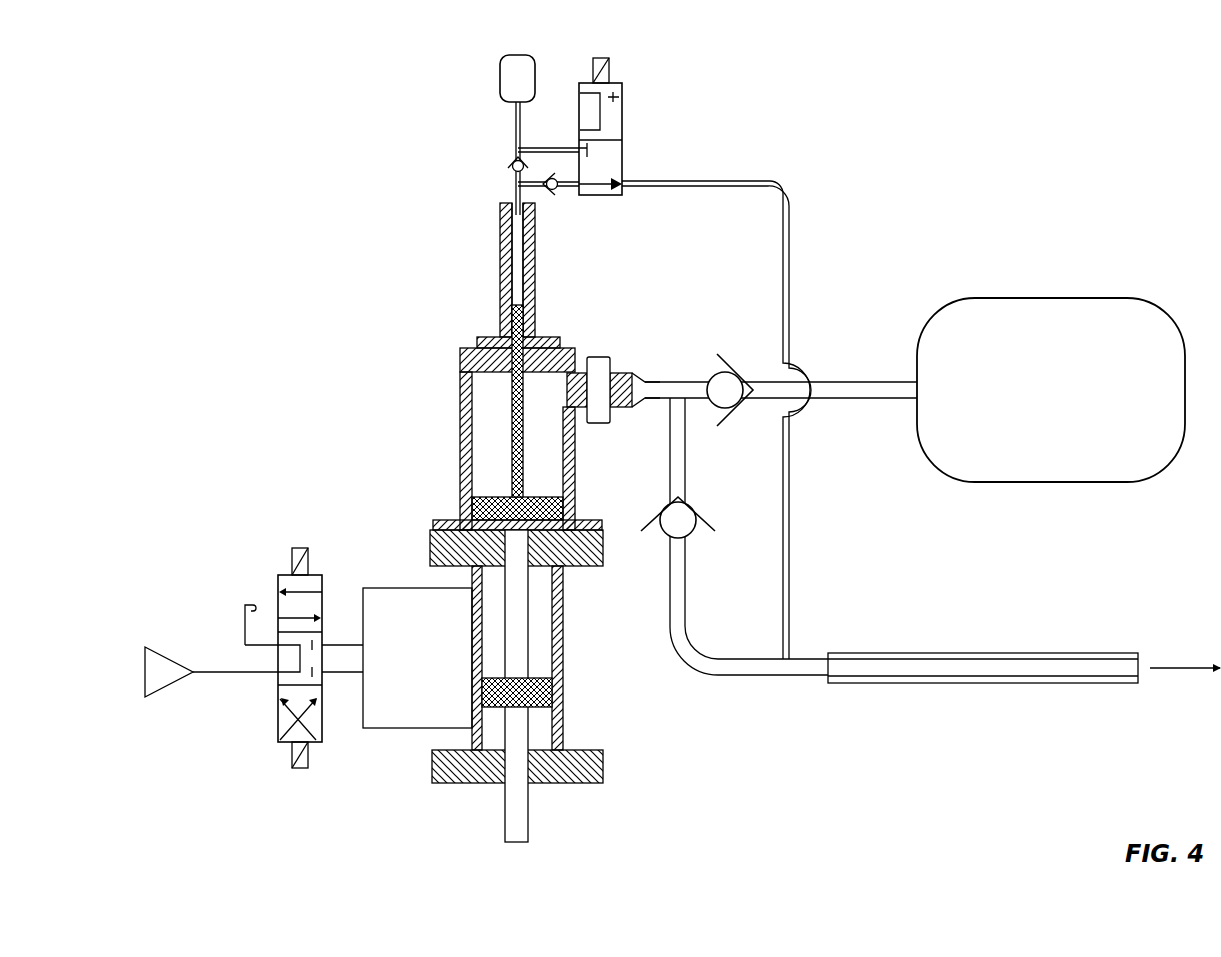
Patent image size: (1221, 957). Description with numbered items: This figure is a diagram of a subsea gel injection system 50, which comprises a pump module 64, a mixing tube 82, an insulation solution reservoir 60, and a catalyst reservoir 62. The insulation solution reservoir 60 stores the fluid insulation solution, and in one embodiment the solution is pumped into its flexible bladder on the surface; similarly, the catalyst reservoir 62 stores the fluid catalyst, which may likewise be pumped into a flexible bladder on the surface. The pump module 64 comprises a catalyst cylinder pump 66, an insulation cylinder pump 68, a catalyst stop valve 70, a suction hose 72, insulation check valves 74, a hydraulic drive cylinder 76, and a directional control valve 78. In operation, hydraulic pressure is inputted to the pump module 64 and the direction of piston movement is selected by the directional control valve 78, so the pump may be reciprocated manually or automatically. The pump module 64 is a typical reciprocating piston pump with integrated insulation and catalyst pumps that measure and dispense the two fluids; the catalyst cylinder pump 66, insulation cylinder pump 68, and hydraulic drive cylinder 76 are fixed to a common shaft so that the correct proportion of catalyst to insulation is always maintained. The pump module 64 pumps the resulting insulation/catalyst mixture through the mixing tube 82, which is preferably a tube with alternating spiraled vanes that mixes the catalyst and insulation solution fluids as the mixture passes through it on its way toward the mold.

The subsea gel injection system 50 is at (160, 97).
The insulation solution reservoir 60 is at (1103, 298).
The catalyst reservoir 62 is at (500, 75).
The pump module 64 is at (447, 785).
The catalyst cylinder pump 66 is at (500, 270).
The insulation cylinder pump 68 is at (460, 433).
The catalyst stop valve 70 is at (623, 112).
The suction hose 72 is at (847, 381).
The insulation check valves 74 is at (716, 378).
The hydraulic drive cylinder 76 is at (563, 657).
The directional control valve 78 is at (278, 720).
The mixing tube 82 is at (1118, 652).